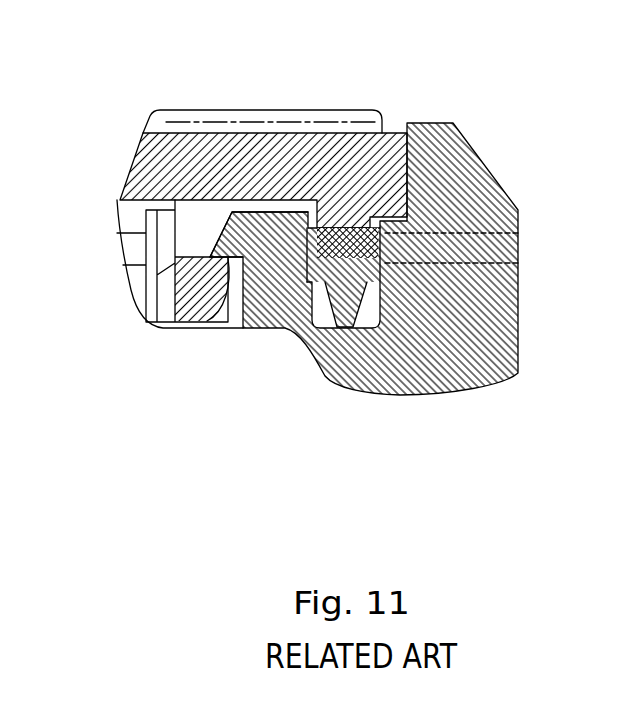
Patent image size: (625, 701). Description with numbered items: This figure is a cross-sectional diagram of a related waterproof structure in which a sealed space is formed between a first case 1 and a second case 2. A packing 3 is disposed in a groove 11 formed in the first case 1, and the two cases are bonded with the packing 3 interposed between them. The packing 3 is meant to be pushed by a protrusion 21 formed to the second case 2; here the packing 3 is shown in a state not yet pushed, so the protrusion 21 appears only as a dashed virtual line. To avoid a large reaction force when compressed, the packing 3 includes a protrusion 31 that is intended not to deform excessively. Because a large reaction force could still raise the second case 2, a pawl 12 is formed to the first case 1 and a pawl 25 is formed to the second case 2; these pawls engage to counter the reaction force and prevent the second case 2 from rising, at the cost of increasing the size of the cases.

The first case 1 is at (521, 166).
The second case 2 is at (279, 104).
The packing 3 is at (518, 262).
The groove 11 is at (323, 325).
The pawl 12 is at (212, 238).
The protrusion 21 is at (518, 233).
The pawl 25 is at (190, 321).
The protrusion 31 is at (350, 330).